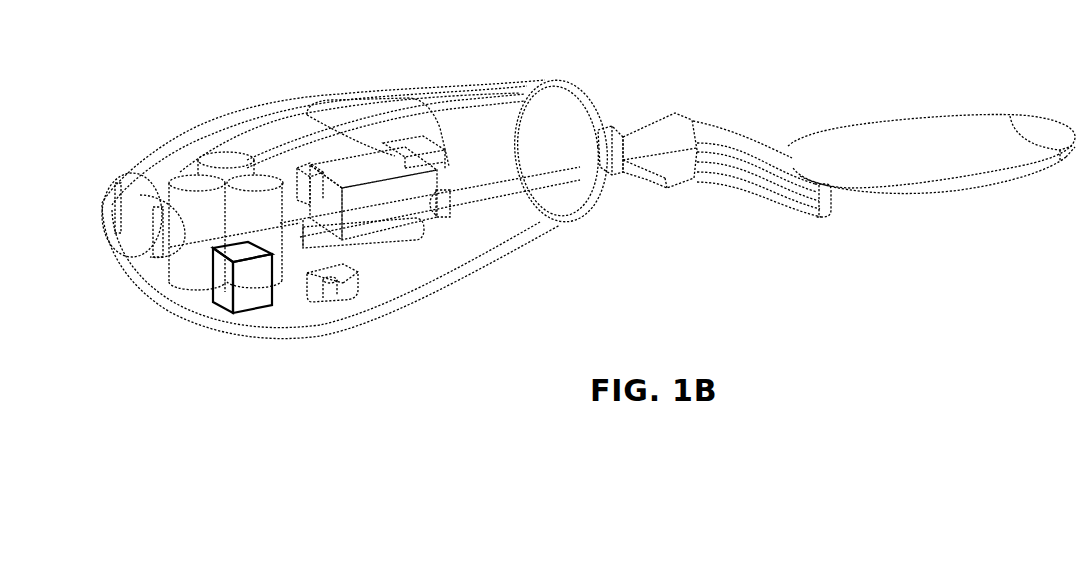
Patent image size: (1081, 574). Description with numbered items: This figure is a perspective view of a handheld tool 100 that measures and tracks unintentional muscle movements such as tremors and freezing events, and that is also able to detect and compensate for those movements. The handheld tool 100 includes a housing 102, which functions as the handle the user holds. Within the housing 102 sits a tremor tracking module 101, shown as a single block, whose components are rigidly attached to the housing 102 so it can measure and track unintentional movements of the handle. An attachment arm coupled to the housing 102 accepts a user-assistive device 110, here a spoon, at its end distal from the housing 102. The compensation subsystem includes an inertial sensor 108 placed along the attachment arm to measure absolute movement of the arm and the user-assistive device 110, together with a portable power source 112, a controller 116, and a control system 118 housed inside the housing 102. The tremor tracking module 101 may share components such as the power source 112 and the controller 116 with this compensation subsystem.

The handheld tool 100 is at (970, 321).
The tremor tracking module 101 is at (258, 300).
The housing 102 is at (65, 158).
The inertial sensor 108 is at (828, 225).
The user-assistive device 110 is at (911, 160).
The portable power source 112 is at (171, 283).
The controller 116 is at (426, 257).
The control system 118 is at (410, 259).